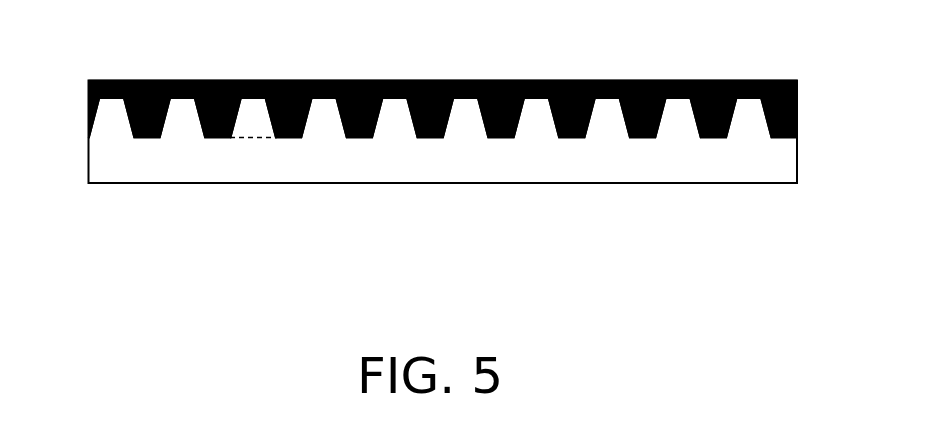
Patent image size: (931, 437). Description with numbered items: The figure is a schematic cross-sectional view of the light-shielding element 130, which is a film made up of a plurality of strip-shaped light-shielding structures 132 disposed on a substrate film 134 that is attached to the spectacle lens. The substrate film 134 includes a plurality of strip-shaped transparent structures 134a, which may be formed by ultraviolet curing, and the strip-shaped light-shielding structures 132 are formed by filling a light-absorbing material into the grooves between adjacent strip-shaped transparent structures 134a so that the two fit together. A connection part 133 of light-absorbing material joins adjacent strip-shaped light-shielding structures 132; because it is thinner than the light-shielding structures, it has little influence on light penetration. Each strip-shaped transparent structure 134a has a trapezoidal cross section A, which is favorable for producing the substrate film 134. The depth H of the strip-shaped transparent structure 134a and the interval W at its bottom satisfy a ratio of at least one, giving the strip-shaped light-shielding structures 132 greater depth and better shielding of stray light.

The light-shielding element 130 is at (446, 153).
The strip-shaped light-shielding structures 132 is at (790, 105).
The connection part 133 is at (609, 82).
The substrate film 134 is at (783, 167).
The strip-shaped transparent structures 134a is at (182, 113).
The depth of the strip-shaped transparent structure H is at (55, 98).
The interval at the bottom of the strip-shaped transparent structures W is at (135, 138).
The cross section of the strip-shaped transparent structure A is at (255, 138).